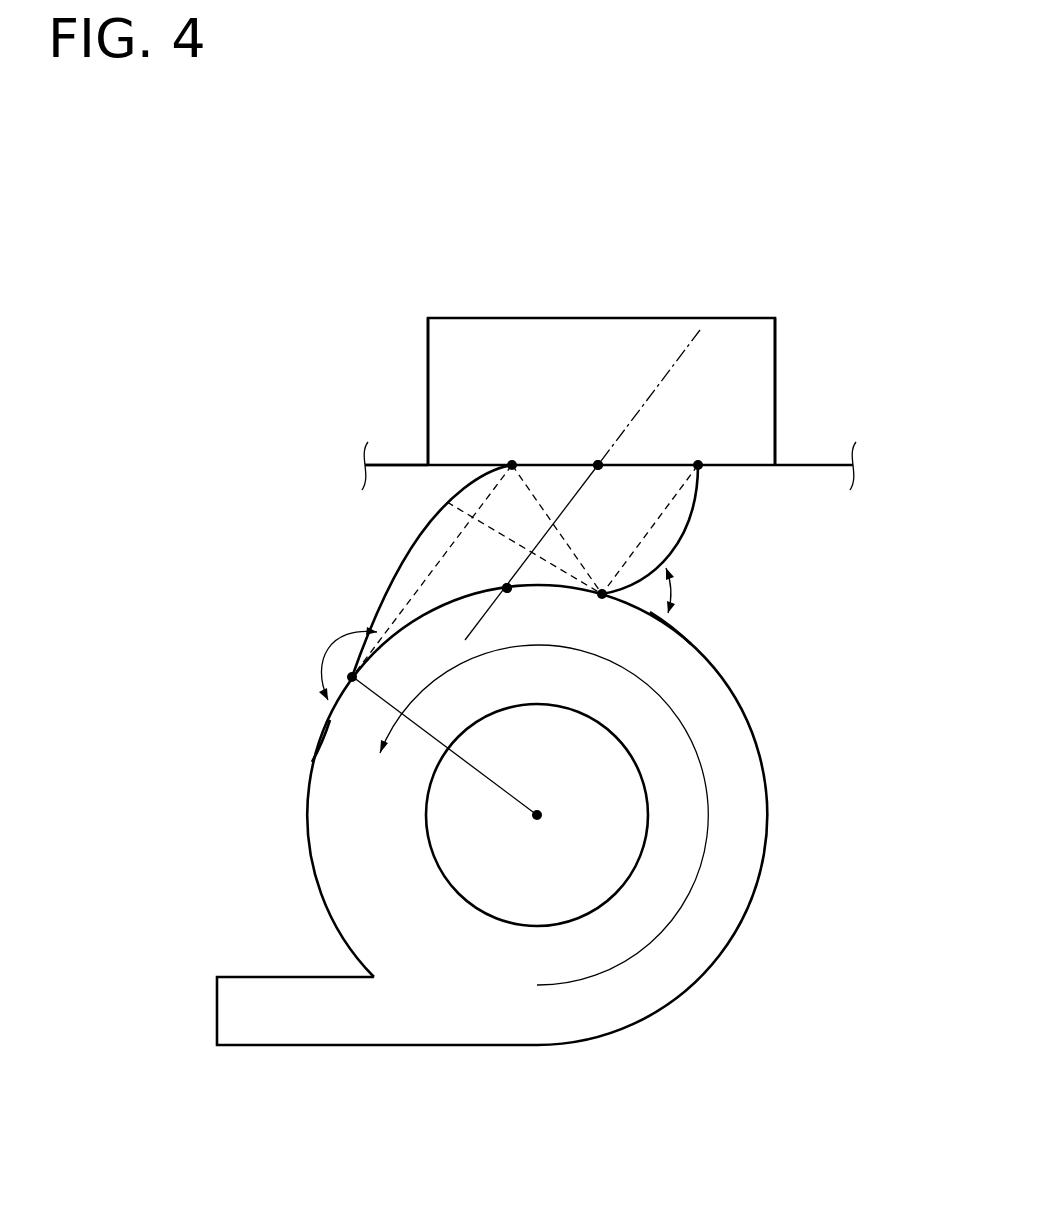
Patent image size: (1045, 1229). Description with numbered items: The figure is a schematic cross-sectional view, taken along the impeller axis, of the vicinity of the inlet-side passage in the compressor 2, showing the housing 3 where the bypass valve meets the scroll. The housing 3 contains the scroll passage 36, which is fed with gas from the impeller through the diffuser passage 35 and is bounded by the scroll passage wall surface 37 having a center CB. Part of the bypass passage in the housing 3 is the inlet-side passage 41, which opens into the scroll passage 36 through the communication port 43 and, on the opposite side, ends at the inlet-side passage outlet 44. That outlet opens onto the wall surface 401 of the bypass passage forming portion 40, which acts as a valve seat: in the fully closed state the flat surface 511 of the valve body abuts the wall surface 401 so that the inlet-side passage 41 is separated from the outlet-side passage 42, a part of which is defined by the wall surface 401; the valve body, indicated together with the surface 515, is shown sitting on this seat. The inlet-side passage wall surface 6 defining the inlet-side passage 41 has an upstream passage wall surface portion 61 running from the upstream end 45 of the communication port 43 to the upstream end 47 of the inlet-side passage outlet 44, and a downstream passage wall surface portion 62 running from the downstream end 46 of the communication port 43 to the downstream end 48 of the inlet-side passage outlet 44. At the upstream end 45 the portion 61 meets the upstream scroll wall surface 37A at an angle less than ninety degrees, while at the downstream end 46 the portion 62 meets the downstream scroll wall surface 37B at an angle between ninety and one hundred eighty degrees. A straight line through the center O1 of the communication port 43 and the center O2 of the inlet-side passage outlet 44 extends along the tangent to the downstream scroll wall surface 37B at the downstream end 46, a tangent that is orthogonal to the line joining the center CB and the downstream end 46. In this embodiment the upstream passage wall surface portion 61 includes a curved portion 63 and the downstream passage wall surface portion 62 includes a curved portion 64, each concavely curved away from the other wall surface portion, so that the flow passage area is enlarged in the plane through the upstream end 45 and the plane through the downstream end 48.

The compressor 2 is at (238, 190).
The housing 3 is at (576, 341).
The flat surface of the valve body 511 is at (755, 462).
The side surface of heat generating body 515 is at (428, 365).
The wall surface 401 is at (645, 437).
The bypass passage forming portion 40 is at (822, 462).
The outlet-side passage 42 is at (340, 438).
The inlet-side passage 41 is at (558, 543).
The inlet-side passage wall surface 6 is at (558, 571).
The upstream passage wall surface portion 61 is at (702, 529).
The downstream passage wall surface portion 62 is at (412, 571).
The curved portion 63 is at (702, 512).
The curved portion 64 is at (408, 557).
The communication port 43 is at (509, 592).
The inlet-side passage outlet 44 is at (598, 460).
The upstream end of the communication port 45 is at (602, 598).
The downstream end of the communication port 46 is at (353, 682).
The upstream end of the inlet-side passage outlet 47 is at (698, 460).
The downstream end of the inlet-side passage outlet 48 is at (512, 460).
The center of the communication port O1 is at (504, 586).
The center of the inlet-side passage outlet O2 is at (602, 462).
The diffuser passage 35 is at (277, 1017).
The scroll passage 36 is at (572, 1017).
The scroll passage wall surface 37 is at (690, 996).
The upstream scroll wall surface 37A is at (692, 642).
The downstream scroll wall surface 37B is at (311, 762).
The center of the scroll passage CB is at (541, 812).